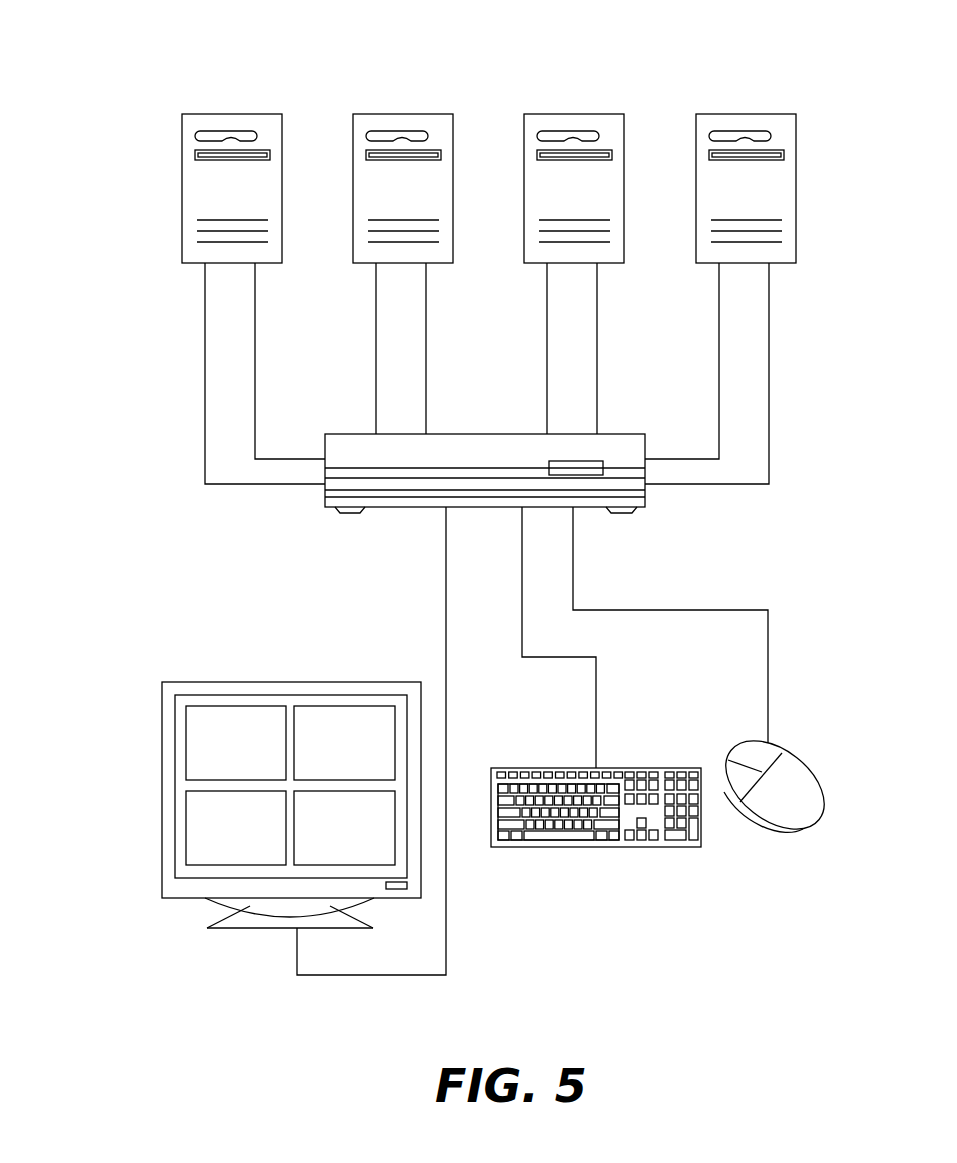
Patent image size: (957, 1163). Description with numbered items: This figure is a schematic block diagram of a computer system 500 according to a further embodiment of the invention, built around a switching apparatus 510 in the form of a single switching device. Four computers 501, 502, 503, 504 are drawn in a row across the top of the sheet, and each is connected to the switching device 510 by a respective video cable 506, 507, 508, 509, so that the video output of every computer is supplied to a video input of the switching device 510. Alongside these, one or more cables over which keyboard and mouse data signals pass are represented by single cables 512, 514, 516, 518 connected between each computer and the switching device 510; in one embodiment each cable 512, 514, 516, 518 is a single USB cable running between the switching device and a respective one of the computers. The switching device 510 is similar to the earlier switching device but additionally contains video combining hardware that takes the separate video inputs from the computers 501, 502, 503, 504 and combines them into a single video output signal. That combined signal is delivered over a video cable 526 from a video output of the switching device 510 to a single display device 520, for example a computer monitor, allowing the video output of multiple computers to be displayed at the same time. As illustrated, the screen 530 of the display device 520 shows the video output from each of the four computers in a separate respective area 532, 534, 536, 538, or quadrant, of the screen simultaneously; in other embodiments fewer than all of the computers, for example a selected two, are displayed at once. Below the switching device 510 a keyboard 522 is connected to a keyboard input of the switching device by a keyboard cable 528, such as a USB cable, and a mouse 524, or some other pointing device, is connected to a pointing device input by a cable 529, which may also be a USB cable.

The computer system 500 is at (185, 60).
The computer 501 is at (212, 201).
The computer 502 is at (383, 201).
The computer 503 is at (554, 201).
The computer 504 is at (726, 201).
The video cable 506 is at (205, 360).
The video cable 507 is at (376, 348).
The video cable 508 is at (547, 357).
The video cable 509 is at (719, 347).
The switching apparatus 510 is at (645, 497).
The cable 512 is at (287, 312).
The cable 514 is at (426, 316).
The cable 516 is at (597, 326).
The cable 518 is at (769, 338).
The display device 520 is at (247, 763).
The keyboard 522 is at (567, 847).
The mouse 524 is at (790, 826).
The video cable 526 is at (446, 612).
The keyboard cable 528 is at (596, 697).
The cable 529 is at (768, 680).
The screen 530 is at (187, 706).
The area 532 is at (216, 753).
The area 534 is at (324, 753).
The area 536 is at (216, 838).
The area 538 is at (324, 838).